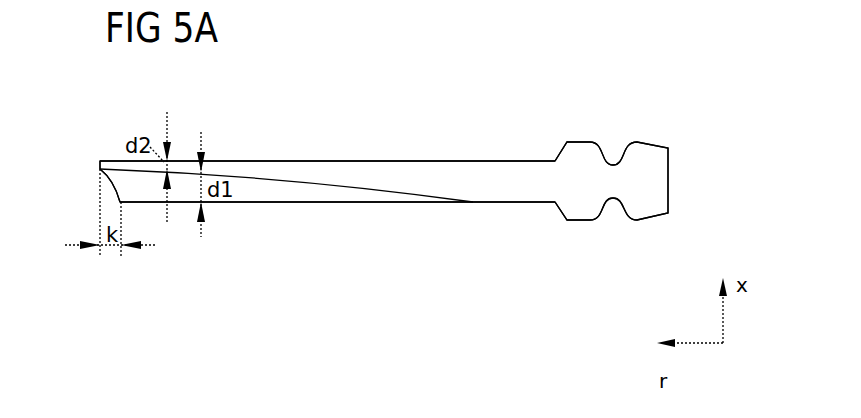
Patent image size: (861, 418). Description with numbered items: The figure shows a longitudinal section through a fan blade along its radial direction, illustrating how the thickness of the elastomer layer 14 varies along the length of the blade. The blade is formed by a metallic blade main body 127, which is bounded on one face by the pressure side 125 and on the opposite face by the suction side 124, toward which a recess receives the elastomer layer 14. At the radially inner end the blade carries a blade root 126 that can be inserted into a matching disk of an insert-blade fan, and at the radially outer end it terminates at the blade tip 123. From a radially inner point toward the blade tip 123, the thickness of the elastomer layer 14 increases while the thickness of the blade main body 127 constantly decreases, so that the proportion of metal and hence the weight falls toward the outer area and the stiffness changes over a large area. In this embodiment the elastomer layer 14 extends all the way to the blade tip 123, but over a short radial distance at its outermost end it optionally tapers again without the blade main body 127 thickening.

The elastomer layer 14 is at (243, 190).
The blade tip 123 is at (100, 167).
The suction side 124 is at (393, 203).
The pressure side 125 is at (366, 161).
The blade root 126 is at (647, 201).
The blade main body 127 is at (297, 168).